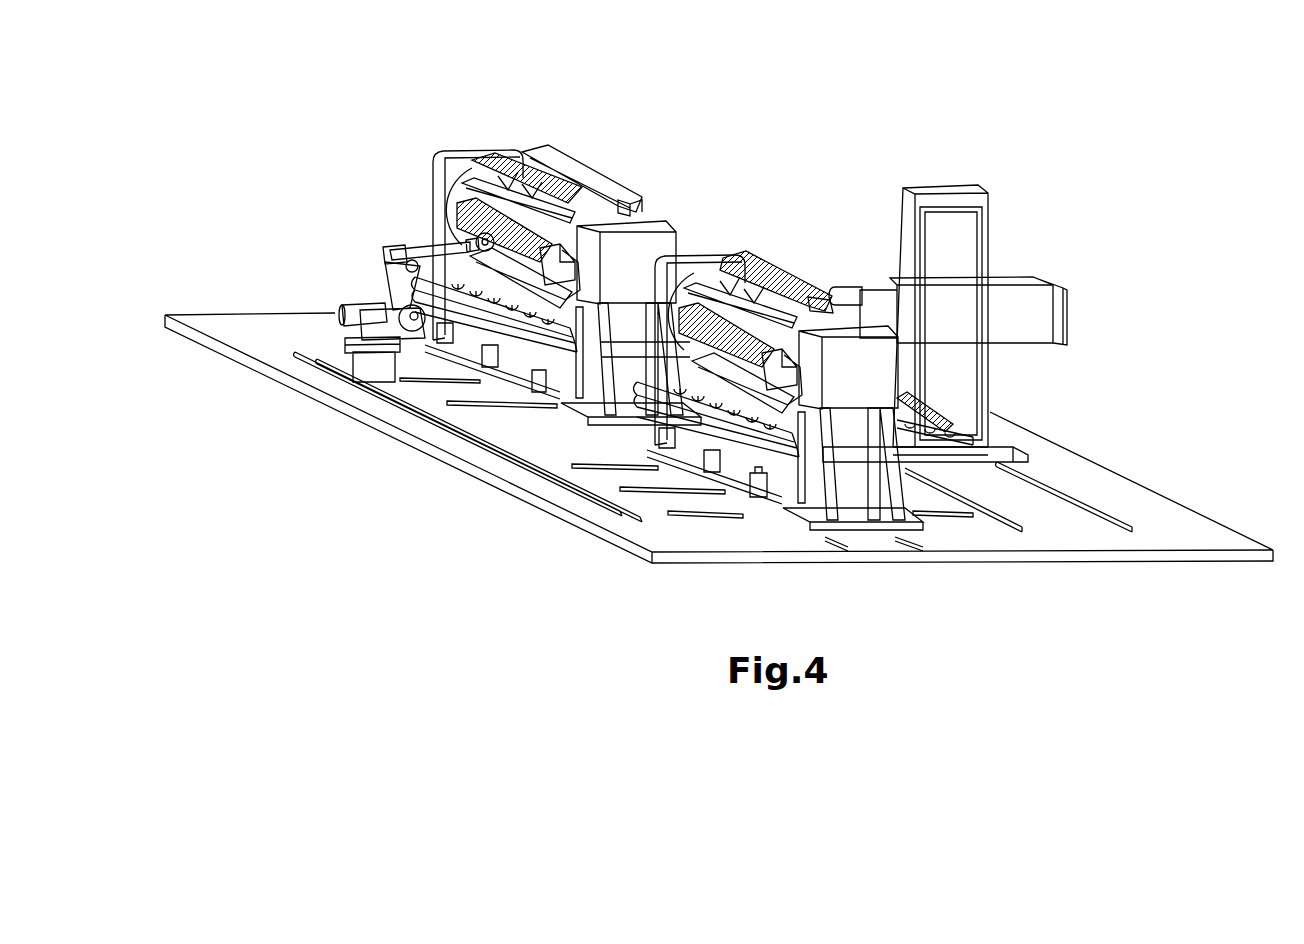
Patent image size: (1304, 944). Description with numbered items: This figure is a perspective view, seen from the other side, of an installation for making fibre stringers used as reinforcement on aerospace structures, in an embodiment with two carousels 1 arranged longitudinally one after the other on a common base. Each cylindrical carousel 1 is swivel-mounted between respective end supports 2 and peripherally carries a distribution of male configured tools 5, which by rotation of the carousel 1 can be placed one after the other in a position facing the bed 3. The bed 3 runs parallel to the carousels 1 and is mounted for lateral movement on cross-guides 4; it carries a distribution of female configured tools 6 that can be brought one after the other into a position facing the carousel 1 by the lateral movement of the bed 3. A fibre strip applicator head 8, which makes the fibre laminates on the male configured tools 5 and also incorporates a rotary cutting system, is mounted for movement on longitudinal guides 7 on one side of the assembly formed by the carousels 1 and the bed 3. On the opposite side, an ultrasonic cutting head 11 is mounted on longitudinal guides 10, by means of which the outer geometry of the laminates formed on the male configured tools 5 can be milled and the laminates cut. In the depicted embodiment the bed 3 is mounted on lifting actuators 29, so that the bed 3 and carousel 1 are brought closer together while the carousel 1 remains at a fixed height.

The cylindrical carousel 1 is at (553, 160).
The end supports 2 is at (472, 155).
The bed 3 is at (475, 322).
The cross-guides 4 is at (643, 488).
The male configured tools 5 is at (618, 202).
The female configured tools 6 is at (550, 330).
The longitudinal guides 7 is at (987, 510).
The fibre strip applicator head 8 is at (840, 298).
The longitudinal guides 10 is at (533, 472).
The ultrasonic cutting head 11 is at (460, 220).
The lifting actuators 29 is at (757, 472).